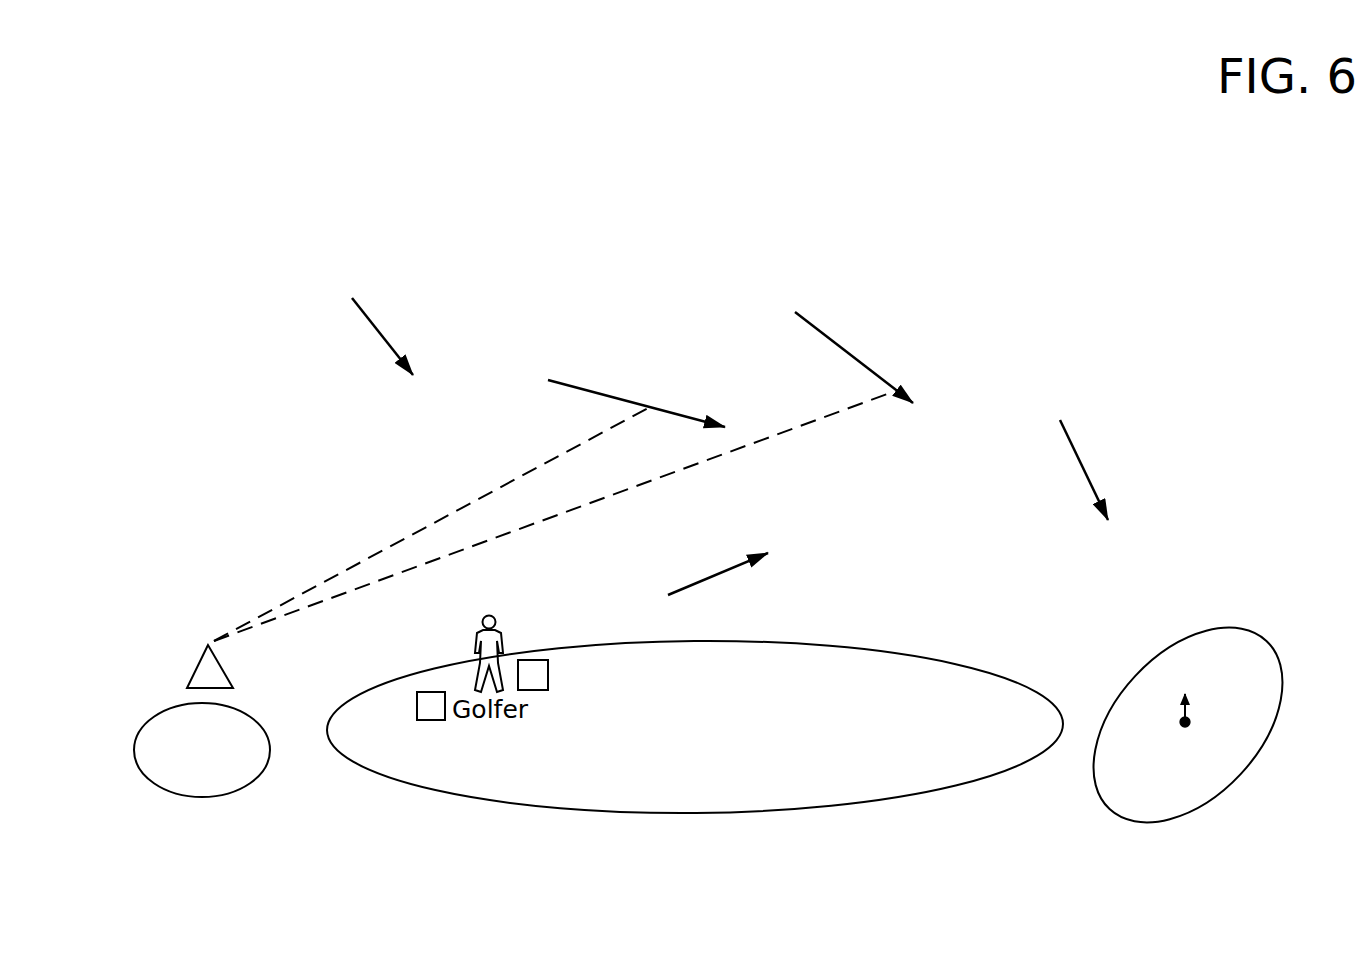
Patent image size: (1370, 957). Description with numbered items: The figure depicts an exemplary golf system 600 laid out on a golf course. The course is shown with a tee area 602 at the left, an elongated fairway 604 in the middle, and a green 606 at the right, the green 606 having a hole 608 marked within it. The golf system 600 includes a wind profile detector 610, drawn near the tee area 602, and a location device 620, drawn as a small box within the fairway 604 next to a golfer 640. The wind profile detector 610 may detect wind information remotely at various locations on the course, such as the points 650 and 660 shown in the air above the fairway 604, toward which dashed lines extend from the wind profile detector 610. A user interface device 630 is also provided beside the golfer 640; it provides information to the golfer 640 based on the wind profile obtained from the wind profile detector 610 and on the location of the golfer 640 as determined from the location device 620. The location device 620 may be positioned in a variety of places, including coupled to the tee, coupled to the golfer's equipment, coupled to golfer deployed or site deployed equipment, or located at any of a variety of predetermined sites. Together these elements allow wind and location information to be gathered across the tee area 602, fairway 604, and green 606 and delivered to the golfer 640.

The golf system 600 is at (354, 321).
The tee area 602 is at (180, 780).
The fairway 604 is at (800, 782).
The green 606 is at (1132, 730).
The hole 608 is at (1188, 713).
The wind profile detector 610 is at (210, 676).
The location device 620 is at (432, 705).
The user interface device 630 is at (530, 673).
The golfer 640 is at (477, 662).
The point 650 is at (652, 410).
The point 660 is at (890, 383).